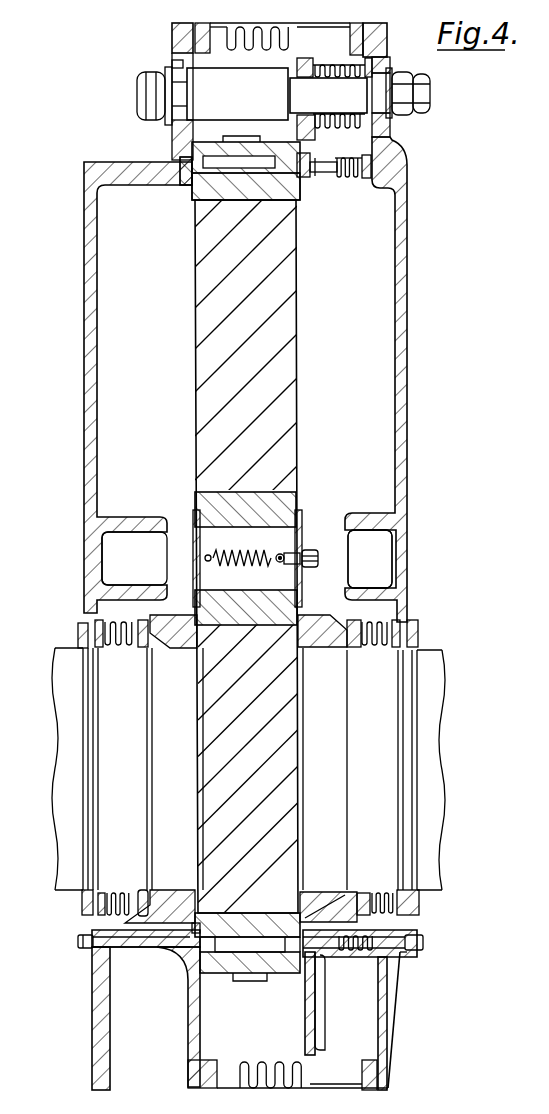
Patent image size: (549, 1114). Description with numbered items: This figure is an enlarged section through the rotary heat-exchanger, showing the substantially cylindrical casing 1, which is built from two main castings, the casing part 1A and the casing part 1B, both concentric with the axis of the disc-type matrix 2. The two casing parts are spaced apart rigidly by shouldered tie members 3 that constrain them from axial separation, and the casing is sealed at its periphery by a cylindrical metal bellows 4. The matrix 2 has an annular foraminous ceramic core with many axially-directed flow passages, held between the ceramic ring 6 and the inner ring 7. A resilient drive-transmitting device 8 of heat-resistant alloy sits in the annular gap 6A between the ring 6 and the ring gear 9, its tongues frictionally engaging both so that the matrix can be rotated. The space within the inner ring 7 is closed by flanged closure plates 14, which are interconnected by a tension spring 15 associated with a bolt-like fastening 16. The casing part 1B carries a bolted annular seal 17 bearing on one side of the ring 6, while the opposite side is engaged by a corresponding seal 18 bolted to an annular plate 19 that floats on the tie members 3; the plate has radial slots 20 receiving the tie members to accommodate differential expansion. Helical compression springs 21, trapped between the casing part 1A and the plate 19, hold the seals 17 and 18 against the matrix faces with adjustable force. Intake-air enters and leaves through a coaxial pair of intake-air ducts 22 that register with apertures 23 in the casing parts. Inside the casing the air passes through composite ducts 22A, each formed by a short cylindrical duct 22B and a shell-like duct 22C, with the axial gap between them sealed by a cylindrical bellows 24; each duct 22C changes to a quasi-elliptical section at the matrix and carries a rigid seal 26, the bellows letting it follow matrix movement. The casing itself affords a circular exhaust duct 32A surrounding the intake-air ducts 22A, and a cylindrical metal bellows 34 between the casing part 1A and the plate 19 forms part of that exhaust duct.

The casing 1 is at (263, 339).
The casing part 1A is at (398, 207).
The casing part 1B is at (86, 258).
The disc-type matrix 2 is at (205, 254).
The shouldered tie members 3 is at (238, 107).
The cylindrical metal bellows 4 is at (243, 48).
The ceramic ring 6 is at (282, 215).
The annular gap 6A is at (229, 551).
The inner ring 7 is at (297, 498).
The resilient drive-transmitting device 8 is at (273, 150).
The ring gear 9 is at (238, 137).
The flanged closure plates 14 is at (193, 524).
The tension spring 15 is at (238, 548).
The bolt-like fastening 16 is at (283, 553).
The annular seal 17 is at (182, 174).
The seal 18 is at (313, 178).
The annular plate 19 is at (310, 146).
The radial slots 20 is at (304, 126).
The helical compression springs 21 is at (338, 70).
The intake-air ducts 22 is at (70, 648).
The ducts 22A is at (354, 652).
The short cylindrical duct 22B is at (110, 648).
The shell-like duct 22C is at (160, 640).
The apertures 23 is at (90, 706).
The cylindrical bellows 24 is at (375, 628).
The seal 26 is at (200, 613).
The exhaust duct 32A is at (203, 828).
The cylindrical metal bellows 34 is at (349, 178).